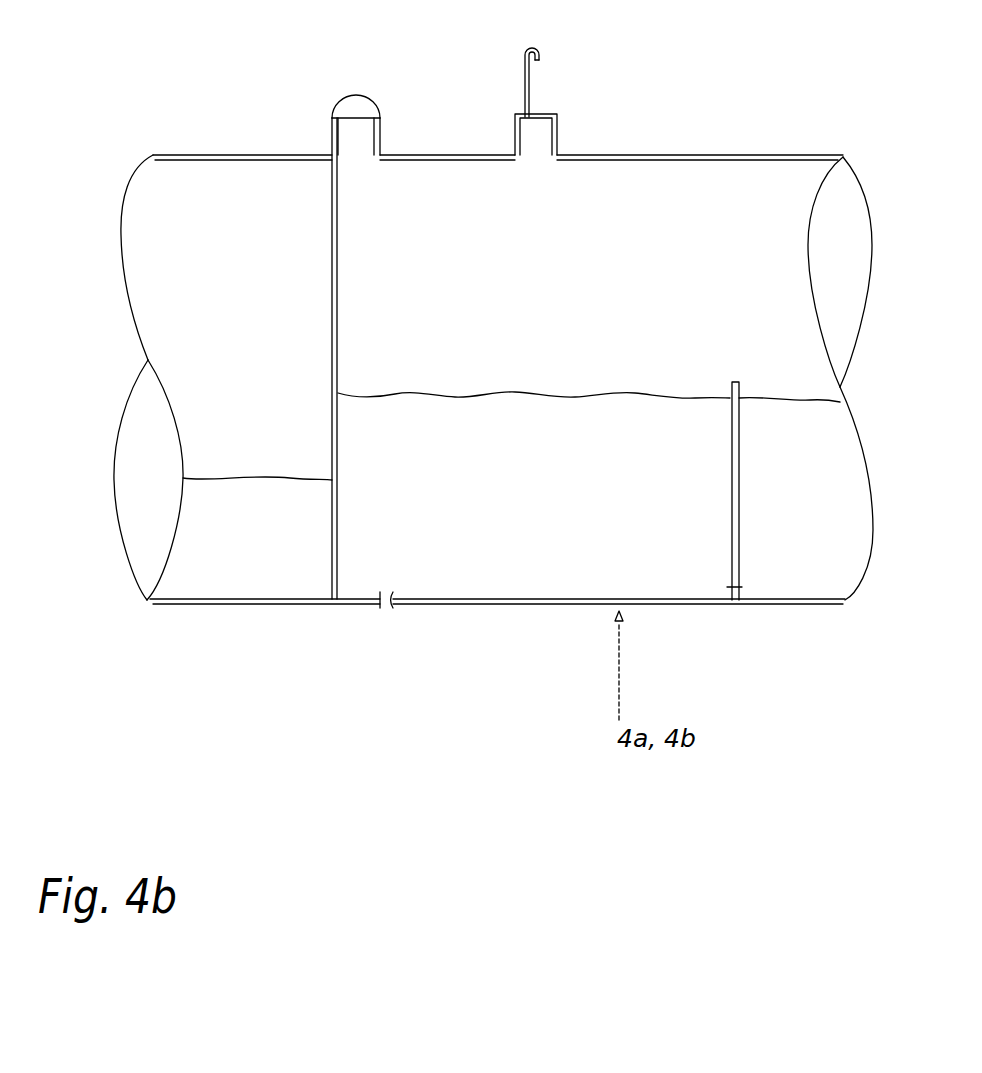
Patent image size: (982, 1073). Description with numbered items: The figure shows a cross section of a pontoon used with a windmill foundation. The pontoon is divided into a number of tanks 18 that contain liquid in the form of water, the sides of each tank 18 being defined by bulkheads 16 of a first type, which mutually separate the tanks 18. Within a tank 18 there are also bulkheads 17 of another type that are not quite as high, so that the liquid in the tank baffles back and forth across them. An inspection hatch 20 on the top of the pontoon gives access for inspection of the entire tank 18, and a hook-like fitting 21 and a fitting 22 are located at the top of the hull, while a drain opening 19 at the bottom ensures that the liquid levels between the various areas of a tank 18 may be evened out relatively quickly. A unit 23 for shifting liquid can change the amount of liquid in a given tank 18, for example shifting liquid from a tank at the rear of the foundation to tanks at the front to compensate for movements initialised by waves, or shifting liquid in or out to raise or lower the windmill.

The bulkhead 16 is at (337, 318).
The bulkhead of another type 17 is at (732, 503).
The tank 18 is at (258, 563).
The drain opening / gap 19 is at (393, 608).
The inspection hatch 20 is at (380, 122).
The hook 21 is at (527, 75).
The drain opening 22 is at (543, 130).
The unit for shifting liquid 23 is at (742, 590).